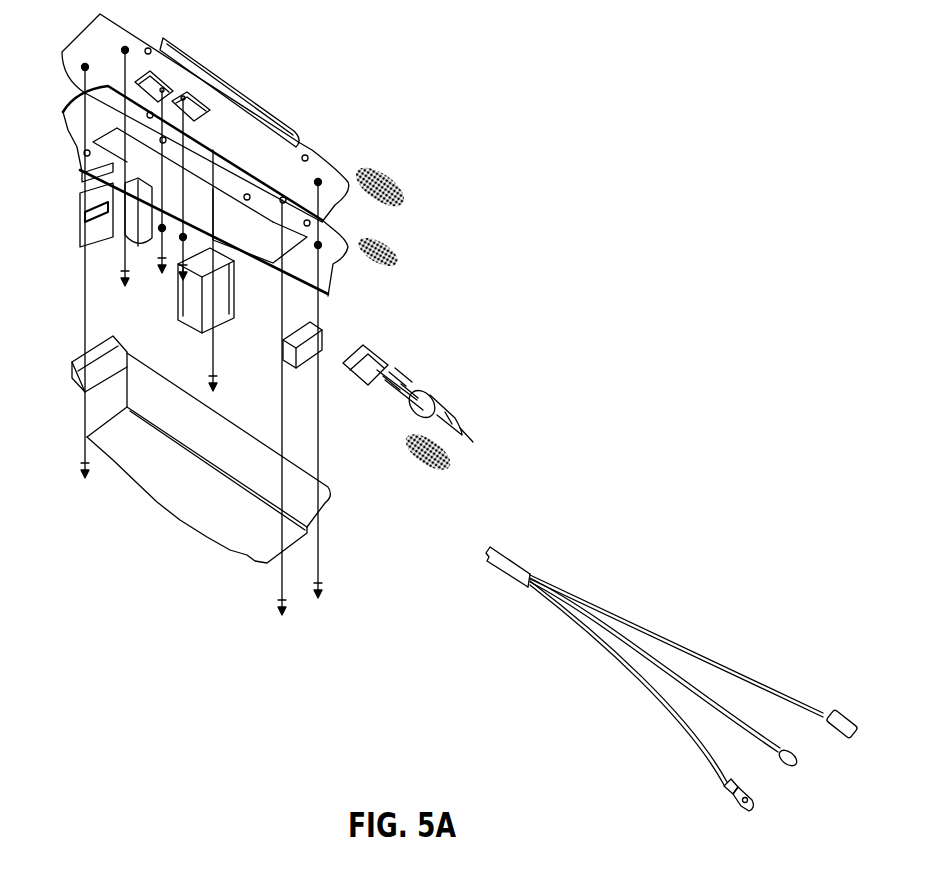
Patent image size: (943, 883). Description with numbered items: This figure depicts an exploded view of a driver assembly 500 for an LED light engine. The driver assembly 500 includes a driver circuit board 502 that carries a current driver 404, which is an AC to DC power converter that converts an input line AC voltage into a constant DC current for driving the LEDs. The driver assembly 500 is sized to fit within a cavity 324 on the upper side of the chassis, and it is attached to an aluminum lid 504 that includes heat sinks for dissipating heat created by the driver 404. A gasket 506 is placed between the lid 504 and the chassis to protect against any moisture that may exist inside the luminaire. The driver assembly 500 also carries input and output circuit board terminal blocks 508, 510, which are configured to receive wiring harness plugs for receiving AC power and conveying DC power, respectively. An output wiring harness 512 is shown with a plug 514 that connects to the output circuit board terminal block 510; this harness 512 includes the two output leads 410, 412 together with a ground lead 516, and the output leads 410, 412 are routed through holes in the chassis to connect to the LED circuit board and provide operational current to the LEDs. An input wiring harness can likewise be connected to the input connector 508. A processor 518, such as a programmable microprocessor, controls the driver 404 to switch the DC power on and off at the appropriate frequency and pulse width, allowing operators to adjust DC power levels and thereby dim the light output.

The cavity 324 is at (137, 498).
The current driver 404 is at (220, 323).
The output lead 410 is at (703, 740).
The output lead 412 is at (680, 650).
The driver assembly 500 is at (337, 305).
The driver circuit board 502 is at (305, 293).
The aluminum lid 504 is at (305, 142).
The gasket 506 is at (340, 247).
The input circuit board terminal block 508 is at (102, 230).
The output circuit board terminal block 510 is at (298, 360).
The output wiring harness 512 is at (512, 555).
The plug 514 is at (382, 352).
The ground lead 516 is at (737, 730).
The processor 518 is at (132, 248).